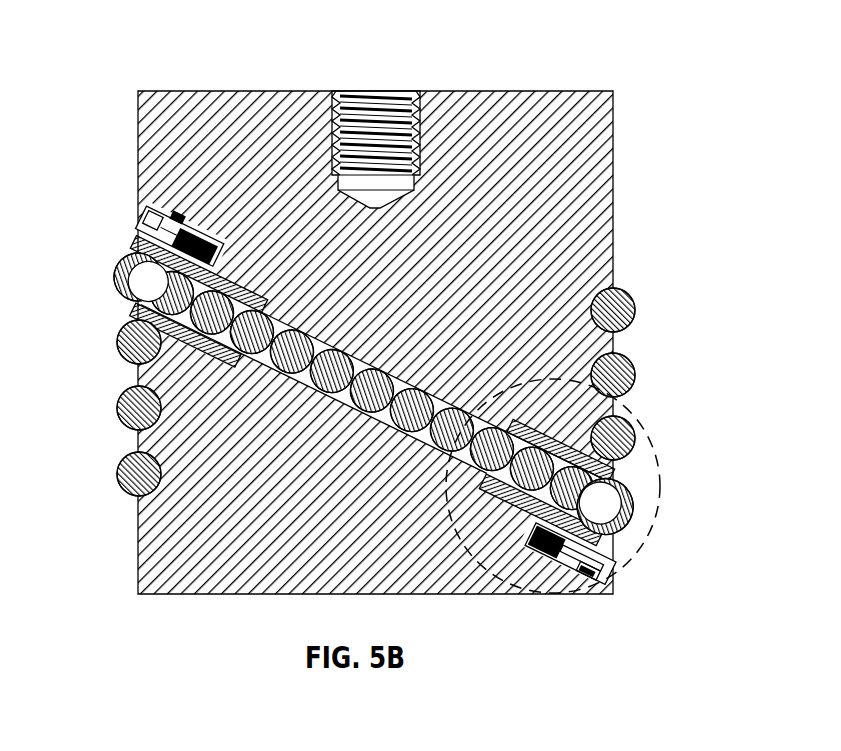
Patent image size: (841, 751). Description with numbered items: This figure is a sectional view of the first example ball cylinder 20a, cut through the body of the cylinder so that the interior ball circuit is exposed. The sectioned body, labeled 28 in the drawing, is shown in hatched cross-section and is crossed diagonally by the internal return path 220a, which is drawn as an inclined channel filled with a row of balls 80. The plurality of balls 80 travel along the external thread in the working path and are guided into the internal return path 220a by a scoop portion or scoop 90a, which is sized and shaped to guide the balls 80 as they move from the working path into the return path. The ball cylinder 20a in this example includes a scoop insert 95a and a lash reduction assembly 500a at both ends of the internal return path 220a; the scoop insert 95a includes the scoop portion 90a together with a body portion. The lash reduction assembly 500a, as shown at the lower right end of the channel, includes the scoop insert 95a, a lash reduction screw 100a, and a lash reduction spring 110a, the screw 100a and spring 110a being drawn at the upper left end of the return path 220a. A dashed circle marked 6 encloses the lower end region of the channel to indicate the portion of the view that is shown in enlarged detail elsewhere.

The ball cylinder 20a is at (124, 35).
The housing block 28 is at (137, 150).
The lash reduction spring 110a is at (178, 213).
The lash reduction screw 100a is at (140, 214).
The scoop portion 90a is at (111, 277).
The balls 80 is at (118, 463).
The internal return path 220a is at (400, 372).
The detail view FIG. 6 region 6 is at (634, 415).
The scoop insert 95a is at (668, 523).
The lash reduction assembly 500a is at (637, 565).